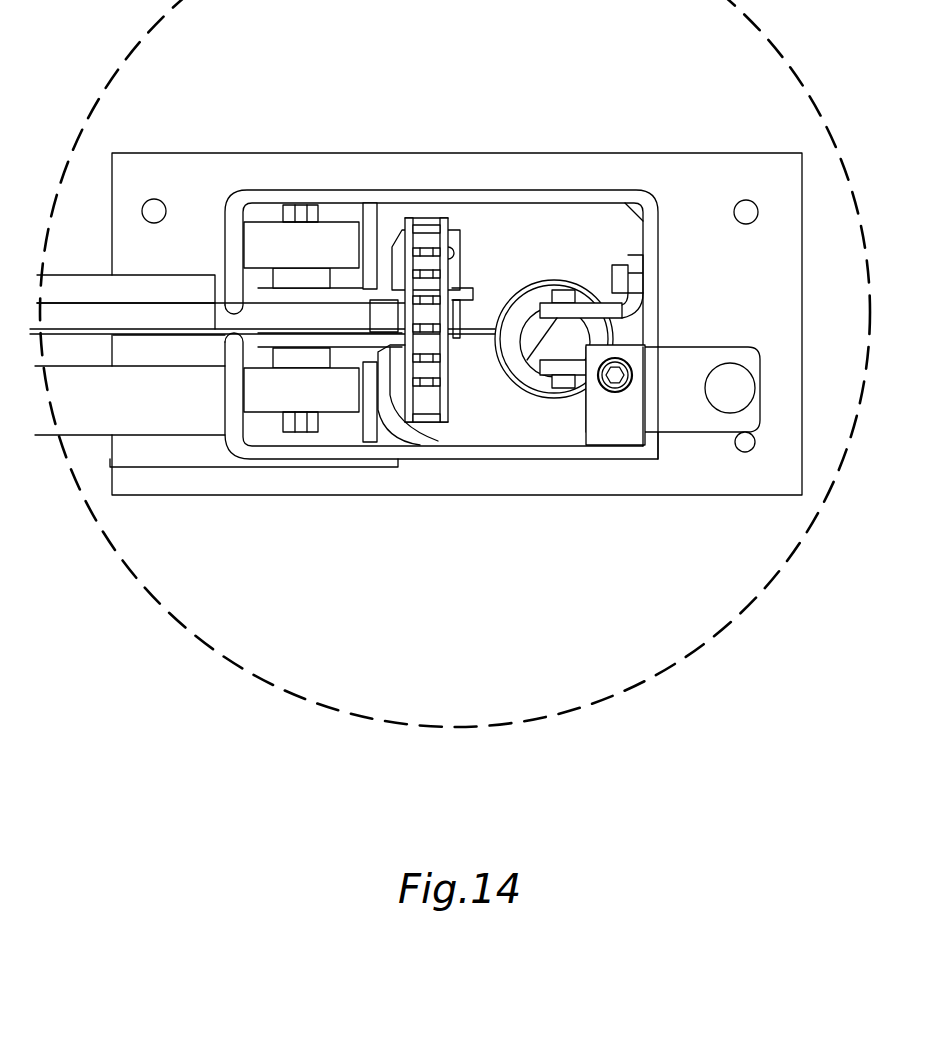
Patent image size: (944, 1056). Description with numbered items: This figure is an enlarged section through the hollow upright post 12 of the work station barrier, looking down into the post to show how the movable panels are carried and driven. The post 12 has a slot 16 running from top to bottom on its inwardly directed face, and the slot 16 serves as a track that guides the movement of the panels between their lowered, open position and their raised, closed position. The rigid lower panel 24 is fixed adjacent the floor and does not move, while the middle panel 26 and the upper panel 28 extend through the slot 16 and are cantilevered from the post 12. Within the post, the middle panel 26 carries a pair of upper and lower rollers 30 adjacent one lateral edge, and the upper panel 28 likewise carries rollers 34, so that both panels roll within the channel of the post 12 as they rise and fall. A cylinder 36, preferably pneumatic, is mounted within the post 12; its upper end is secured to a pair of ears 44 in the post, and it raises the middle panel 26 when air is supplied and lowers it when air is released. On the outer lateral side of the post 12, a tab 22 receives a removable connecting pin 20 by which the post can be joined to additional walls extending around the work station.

The upright post 12 is at (512, 453).
The slot 16 is at (238, 326).
The connecting pin 20 is at (738, 378).
The tab 22 is at (688, 358).
The lower panel 24 is at (117, 413).
The middle panel 26 is at (78, 311).
The upper panel 28 is at (168, 284).
The rollers 30 is at (333, 215).
The rollers 34 is at (254, 238).
The cylinder 36 is at (521, 298).
The ears 44 is at (552, 371).